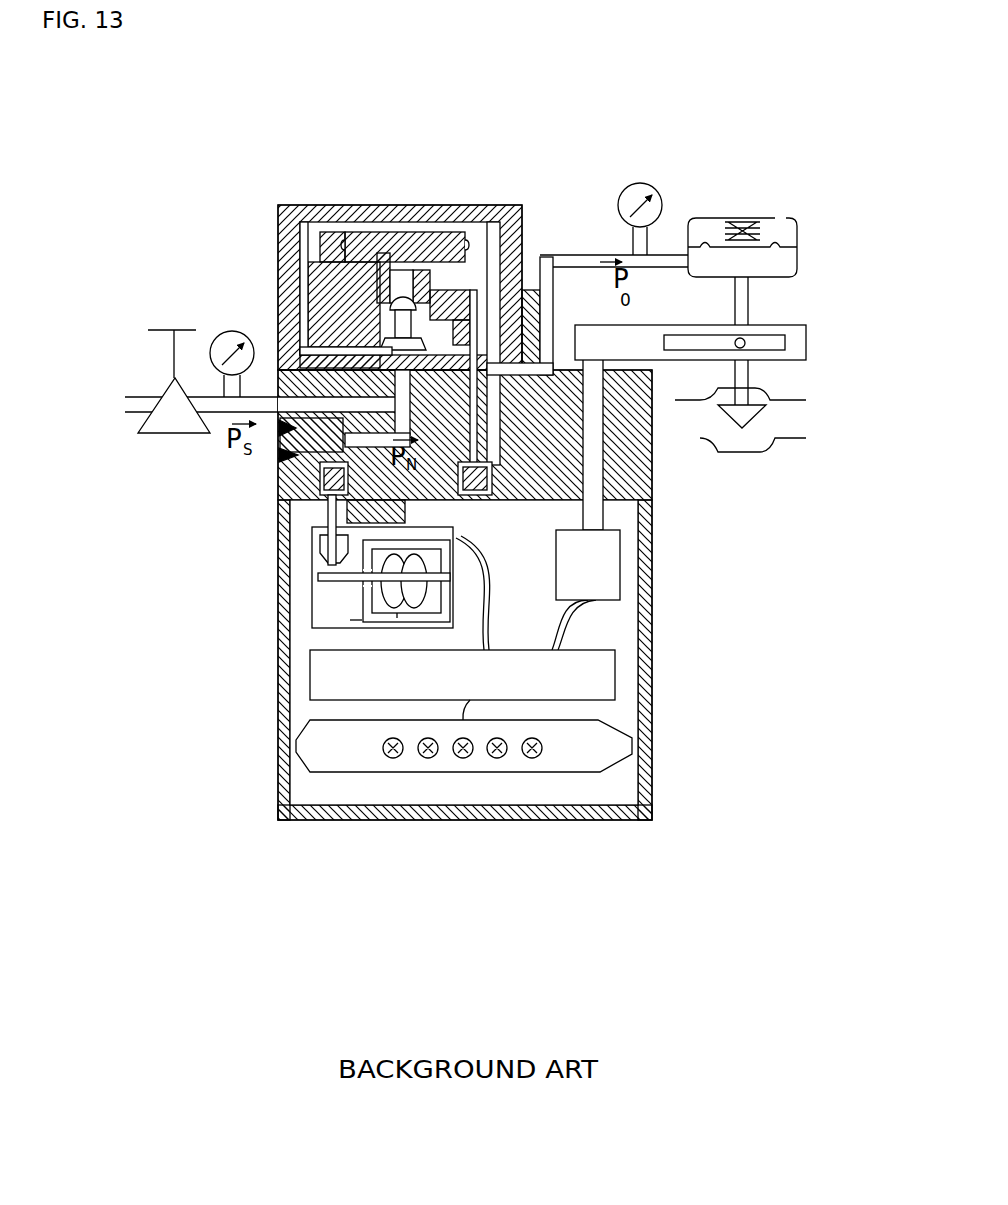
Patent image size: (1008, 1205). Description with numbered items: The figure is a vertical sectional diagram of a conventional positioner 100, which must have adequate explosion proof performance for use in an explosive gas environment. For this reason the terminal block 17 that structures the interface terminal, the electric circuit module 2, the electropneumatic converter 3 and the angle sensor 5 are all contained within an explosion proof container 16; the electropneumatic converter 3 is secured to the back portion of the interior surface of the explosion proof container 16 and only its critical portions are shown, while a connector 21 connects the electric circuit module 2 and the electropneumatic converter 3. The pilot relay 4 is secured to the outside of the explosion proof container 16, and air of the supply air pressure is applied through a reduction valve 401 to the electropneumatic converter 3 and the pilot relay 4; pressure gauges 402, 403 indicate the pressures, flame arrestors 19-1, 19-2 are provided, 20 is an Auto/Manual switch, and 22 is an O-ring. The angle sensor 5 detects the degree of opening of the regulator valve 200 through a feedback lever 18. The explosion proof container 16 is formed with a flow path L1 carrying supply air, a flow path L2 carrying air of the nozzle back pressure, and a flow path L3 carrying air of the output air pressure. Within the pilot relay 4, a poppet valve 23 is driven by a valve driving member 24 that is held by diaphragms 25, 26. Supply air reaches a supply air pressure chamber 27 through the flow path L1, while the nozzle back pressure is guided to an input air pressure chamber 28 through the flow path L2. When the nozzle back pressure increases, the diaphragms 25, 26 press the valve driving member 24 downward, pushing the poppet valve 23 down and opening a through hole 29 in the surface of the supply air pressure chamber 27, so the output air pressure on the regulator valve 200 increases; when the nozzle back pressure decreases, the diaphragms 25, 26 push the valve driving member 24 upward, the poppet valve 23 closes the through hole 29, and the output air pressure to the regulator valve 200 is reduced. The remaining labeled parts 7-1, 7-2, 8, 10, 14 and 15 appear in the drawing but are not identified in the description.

The positioner 100 is at (310, 835).
The electric circuit module 2 is at (615, 670).
The electropneumatic converter 3 is at (337, 574).
The pilot relay 4 is at (404, 205).
The angle sensor 5 is at (612, 550).
The lead wire 7-1 is at (436, 540).
The lead wire 7-2 is at (398, 616).
The terminal 8 is at (352, 624).
The electromagnetic actuator 10 is at (320, 578).
The valve element 14 is at (318, 548).
The flow passage 15 is at (440, 388).
The explosion proof container 16 is at (652, 604).
The terminal block 17 is at (630, 741).
The feedback lever 18 is at (800, 335).
The flame arrestor 19-1 is at (292, 494).
The flame arrestor 19-2 is at (492, 481).
The Auto/Manual switch 20 is at (282, 452).
The connector 21 is at (470, 538).
The O-ring 22 is at (352, 245).
The poppet valve 23 is at (498, 265).
The valve driving member 24 is at (440, 232).
The diaphragm 25 is at (340, 245).
The diaphragm 26 is at (340, 242).
The supply air pressure chamber 27 is at (556, 263).
The input air pressure chamber 28 is at (418, 232).
The through hole 29 is at (300, 273).
The regulator valve 200 is at (796, 218).
The reduction valve 401 is at (165, 390).
The pressure gauge 402 is at (223, 330).
The pressure gauge 403 is at (647, 183).
The flow path L1 is at (300, 320).
The flow path L2 is at (368, 513).
The flow path L3 is at (603, 441).